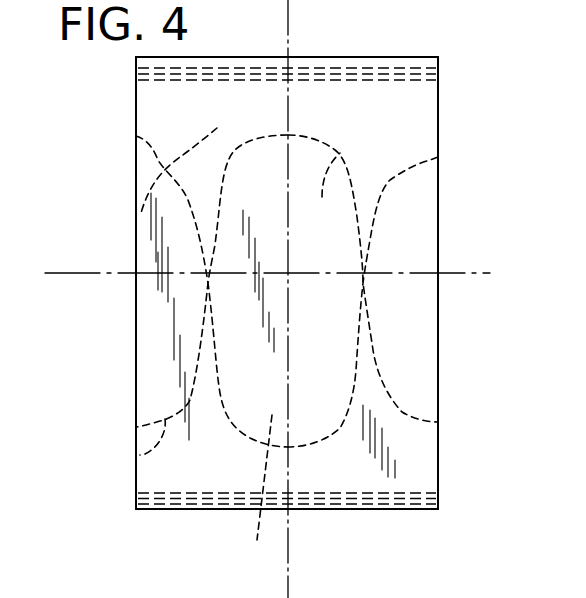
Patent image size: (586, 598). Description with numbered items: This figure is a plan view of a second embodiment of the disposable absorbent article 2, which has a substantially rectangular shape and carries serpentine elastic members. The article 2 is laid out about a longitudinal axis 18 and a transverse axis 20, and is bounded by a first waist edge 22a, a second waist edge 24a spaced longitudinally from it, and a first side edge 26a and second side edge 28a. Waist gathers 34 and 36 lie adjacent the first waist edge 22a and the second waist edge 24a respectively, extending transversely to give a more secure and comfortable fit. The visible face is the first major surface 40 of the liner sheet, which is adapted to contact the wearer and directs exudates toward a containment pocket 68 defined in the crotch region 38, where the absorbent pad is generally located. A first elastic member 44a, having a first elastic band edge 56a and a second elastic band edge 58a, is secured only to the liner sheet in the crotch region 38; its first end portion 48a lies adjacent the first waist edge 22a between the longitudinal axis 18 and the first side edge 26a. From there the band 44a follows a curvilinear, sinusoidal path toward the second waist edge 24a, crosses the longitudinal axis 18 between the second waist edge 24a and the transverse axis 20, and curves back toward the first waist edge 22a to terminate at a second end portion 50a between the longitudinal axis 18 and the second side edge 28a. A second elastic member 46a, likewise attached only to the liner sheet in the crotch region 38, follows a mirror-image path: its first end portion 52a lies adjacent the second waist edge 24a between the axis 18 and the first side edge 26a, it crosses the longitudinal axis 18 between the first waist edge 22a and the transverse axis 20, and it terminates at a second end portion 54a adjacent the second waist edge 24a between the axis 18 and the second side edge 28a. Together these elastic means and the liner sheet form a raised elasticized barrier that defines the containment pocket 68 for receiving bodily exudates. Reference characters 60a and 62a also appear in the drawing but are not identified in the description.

The absorbent article 2 is at (470, 403).
The longitudinal axis 18 is at (287, 42).
The transverse axis 20 is at (113, 278).
The first waist edge 22a is at (397, 58).
The second waist edge 24a is at (328, 509).
The first side edge 26a is at (136, 107).
The second side edge 28a is at (438, 220).
The waist gather 34 is at (319, 62).
The waist gather 36 is at (421, 498).
The crotch region 38 is at (262, 496).
The first major surface 40 is at (414, 463).
The first elastic member 44a is at (136, 136).
The second elastic member 46a is at (140, 455).
The first end portion 48a is at (137, 161).
The second end portion 50a is at (403, 172).
The first end portion 52a is at (138, 425).
The second end portion 54a is at (438, 422).
The first elastic band edge 56a is at (190, 156).
The second elastic band edge 58a is at (137, 226).
The absorbent core outline 60a is at (322, 124).
The core seam 62a is at (322, 194).
The containment pocket 68 is at (323, 317).